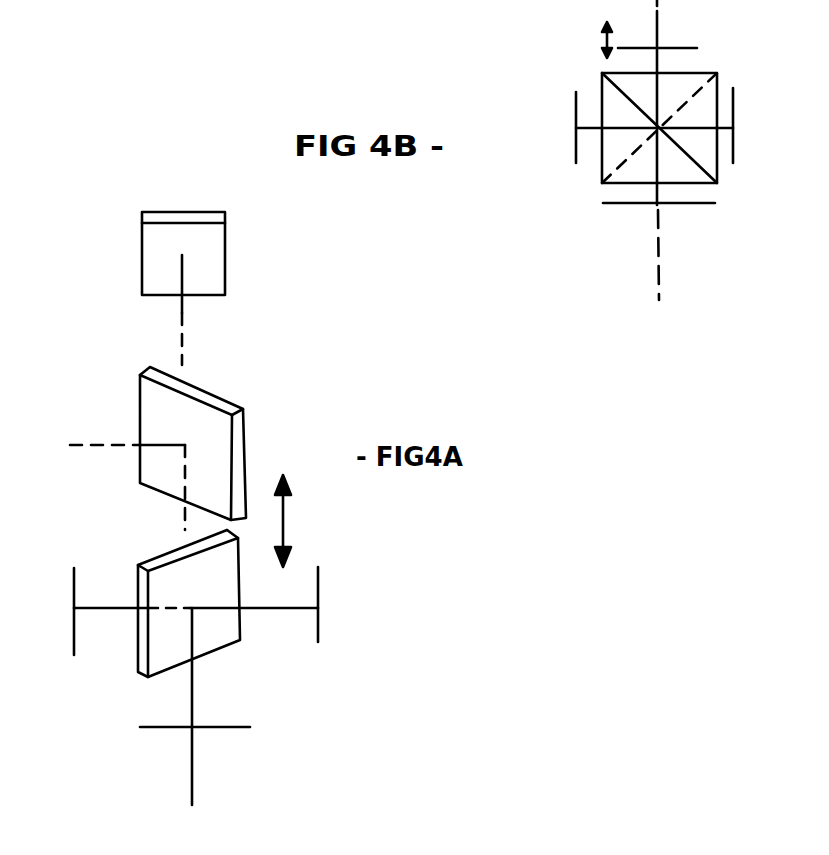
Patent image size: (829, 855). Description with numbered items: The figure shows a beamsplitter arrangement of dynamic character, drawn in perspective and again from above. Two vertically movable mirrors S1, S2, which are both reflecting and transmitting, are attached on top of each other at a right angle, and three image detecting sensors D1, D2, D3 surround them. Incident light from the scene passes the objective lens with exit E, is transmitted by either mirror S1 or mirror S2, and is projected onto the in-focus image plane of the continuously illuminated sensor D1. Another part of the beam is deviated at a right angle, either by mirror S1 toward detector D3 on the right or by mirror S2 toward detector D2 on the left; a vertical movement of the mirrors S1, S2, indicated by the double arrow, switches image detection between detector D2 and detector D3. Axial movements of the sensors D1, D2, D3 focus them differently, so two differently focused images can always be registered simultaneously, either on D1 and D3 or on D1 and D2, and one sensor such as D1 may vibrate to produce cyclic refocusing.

In FIG. 4A, the image detecting sensor D1 is at (214, 288).
In FIG. 4B, the image detecting sensor D1 is at (664, 40).
In FIG. 4A, the image detecting sensor D2 is at (105, 611).
In FIG. 4B, the image detecting sensor D2 is at (549, 127).
In FIG. 4A, the image detecting sensor D3 is at (281, 604).
In FIG. 4B, the image detecting sensor D3 is at (760, 125).
In FIG. 4A, the vertically movable mirror S1 is at (189, 603).
In FIG. 4A, the vertically movable mirror S2 is at (158, 448).
In FIG. 4A, the objective lens exit E is at (213, 706).
In FIG. 4B, the objective lens exit E is at (669, 217).